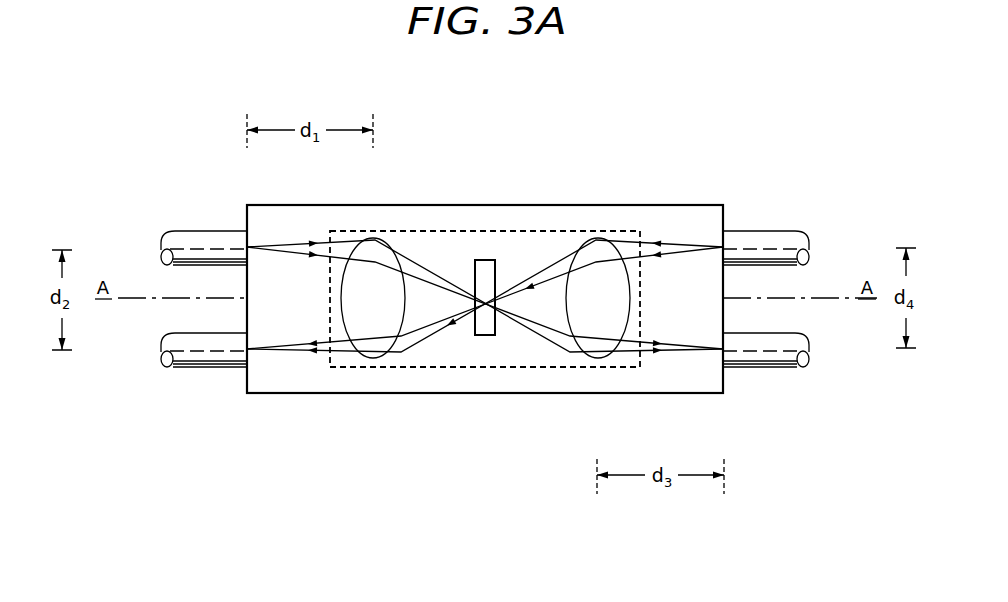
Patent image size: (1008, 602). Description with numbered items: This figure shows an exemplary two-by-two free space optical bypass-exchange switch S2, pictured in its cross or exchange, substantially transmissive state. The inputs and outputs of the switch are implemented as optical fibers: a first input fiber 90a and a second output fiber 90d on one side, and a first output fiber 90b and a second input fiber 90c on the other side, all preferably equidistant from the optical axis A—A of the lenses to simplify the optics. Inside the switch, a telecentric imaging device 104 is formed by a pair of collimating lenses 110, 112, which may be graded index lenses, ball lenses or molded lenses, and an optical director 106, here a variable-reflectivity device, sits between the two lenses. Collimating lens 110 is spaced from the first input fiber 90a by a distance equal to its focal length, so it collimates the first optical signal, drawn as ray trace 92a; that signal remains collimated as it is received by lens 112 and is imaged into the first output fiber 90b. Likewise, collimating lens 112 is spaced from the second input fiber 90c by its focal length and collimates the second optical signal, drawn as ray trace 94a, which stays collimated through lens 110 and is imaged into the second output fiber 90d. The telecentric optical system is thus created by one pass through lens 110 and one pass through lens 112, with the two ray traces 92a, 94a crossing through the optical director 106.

The optical subsystem S2 is at (590, 136).
The first input fiber 90a is at (187, 236).
The first output fiber 90b is at (753, 363).
The second input fiber 90c is at (757, 236).
The second output fiber 90d is at (185, 350).
The ray trace 92a is at (295, 242).
The ray trace 94a is at (250, 347).
The telecentric imaging device 104 is at (430, 240).
The optical director 106 is at (481, 338).
The collimating lens 110 is at (358, 314).
The collimating lens 112 is at (583, 314).